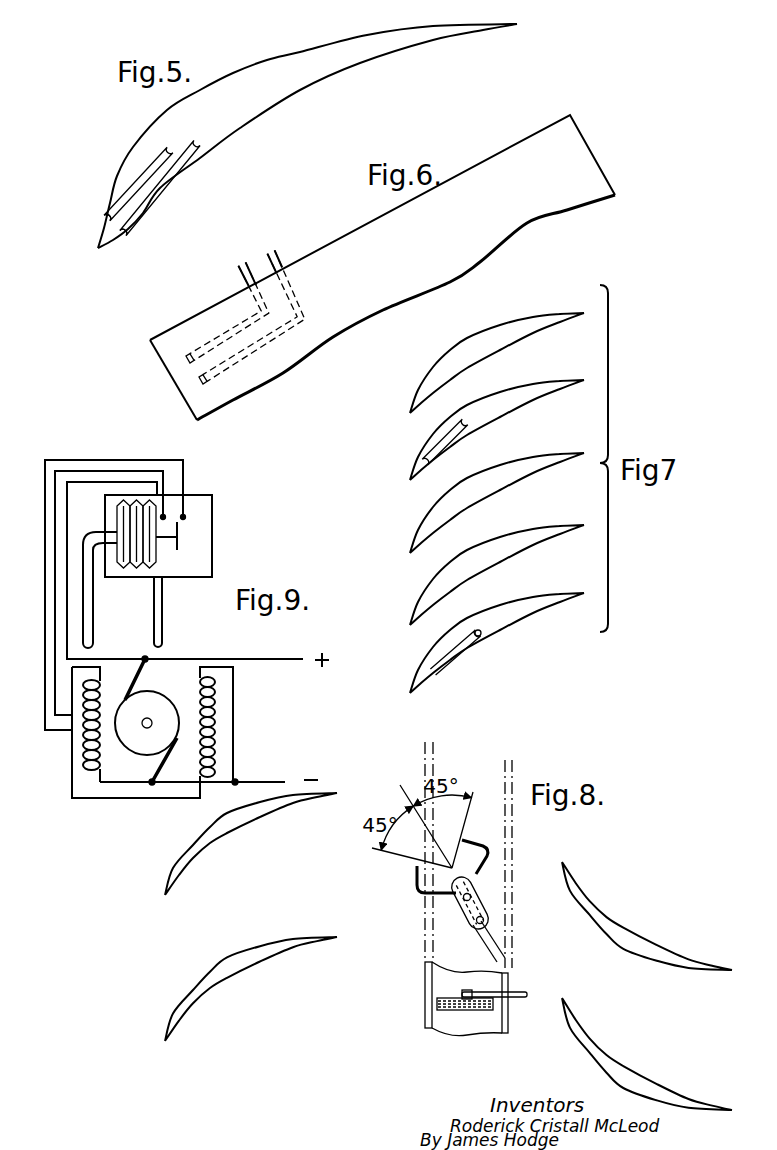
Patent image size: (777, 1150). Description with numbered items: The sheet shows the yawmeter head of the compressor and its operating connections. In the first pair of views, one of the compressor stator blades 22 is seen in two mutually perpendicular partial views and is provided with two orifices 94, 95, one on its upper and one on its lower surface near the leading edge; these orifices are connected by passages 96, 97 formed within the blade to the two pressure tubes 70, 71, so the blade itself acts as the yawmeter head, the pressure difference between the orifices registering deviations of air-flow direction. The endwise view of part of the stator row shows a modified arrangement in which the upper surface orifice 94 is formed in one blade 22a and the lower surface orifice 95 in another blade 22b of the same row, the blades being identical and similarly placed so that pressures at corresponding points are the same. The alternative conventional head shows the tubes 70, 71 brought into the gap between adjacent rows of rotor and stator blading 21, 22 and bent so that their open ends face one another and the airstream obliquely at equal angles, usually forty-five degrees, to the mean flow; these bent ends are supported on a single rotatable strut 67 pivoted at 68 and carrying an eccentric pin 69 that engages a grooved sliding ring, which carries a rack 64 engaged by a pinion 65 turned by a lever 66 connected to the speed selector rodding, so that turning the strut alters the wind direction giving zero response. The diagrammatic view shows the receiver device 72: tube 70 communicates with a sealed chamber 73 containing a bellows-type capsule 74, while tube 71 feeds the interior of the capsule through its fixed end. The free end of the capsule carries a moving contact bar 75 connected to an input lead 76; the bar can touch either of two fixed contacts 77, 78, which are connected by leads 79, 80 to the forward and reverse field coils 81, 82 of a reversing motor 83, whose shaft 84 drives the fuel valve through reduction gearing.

In FIG. 8, the rotor blades 21 is at (232, 830).
In FIG. 5, the stator blades 22 is at (290, 67).
In FIG. 6, the stator blades 22 is at (327, 260).
In FIG. 8, the stator blades 22 is at (652, 942).
In FIG. 7, the stator blade 22a is at (493, 403).
In FIG. 7, the stator blade 22b is at (498, 625).
In FIG. 5, the upper surface orifice 94 is at (103, 220).
In FIG. 6, the upper surface orifice 94 is at (188, 358).
In FIG. 7, the upper surface orifice 94 is at (423, 457).
In FIG. 5, the lower surface orifice 95 is at (128, 237).
In FIG. 6, the lower surface orifice 95 is at (198, 382).
In FIG. 7, the lower surface orifice 95 is at (435, 675).
In FIG. 5, the passage 96 is at (153, 165).
In FIG. 6, the passage 96 is at (240, 327).
In FIG. 5, the passage 97 is at (187, 153).
In FIG. 6, the passage 97 is at (233, 367).
In FIG. 8, the rack 64 is at (443, 1010).
In FIG. 8, the pinion 65 is at (473, 1010).
In FIG. 8, the lever 66 is at (520, 998).
In FIG. 8, the rotatable strut 67 is at (462, 909).
In FIG. 8, the pivot 68 is at (471, 897).
In FIG. 8, the eccentric pin 69 is at (484, 921).
In FIG. 9, the pressure tube 70 is at (160, 635).
In FIG. 8, the pressure tube 70 is at (507, 940).
In FIG. 9, the pressure tube 71 is at (82, 597).
In FIG. 8, the pressure tube 71 is at (487, 943).
In FIG. 9, the electrical receiver device 72 is at (216, 485).
In FIG. 9, the sealed chamber 73 is at (212, 520).
In FIG. 9, the bellows-type capsule 74 is at (113, 522).
In FIG. 9, the moving contact bar 75 is at (177, 547).
In FIG. 9, the input lead 76 is at (227, 658).
In FIG. 9, the fixed contact 77 is at (163, 515).
In FIG. 9, the fixed contact 78 is at (183, 515).
In FIG. 9, the lead 79 is at (90, 471).
In FIG. 9, the lead 80 is at (60, 460).
In FIG. 9, the forward field coil 81 is at (84, 746).
In FIG. 9, the reverse field coil 82 is at (215, 740).
In FIG. 9, the reversing motor 83 is at (153, 745).
In FIG. 9, the motor shaft 84 is at (143, 728).